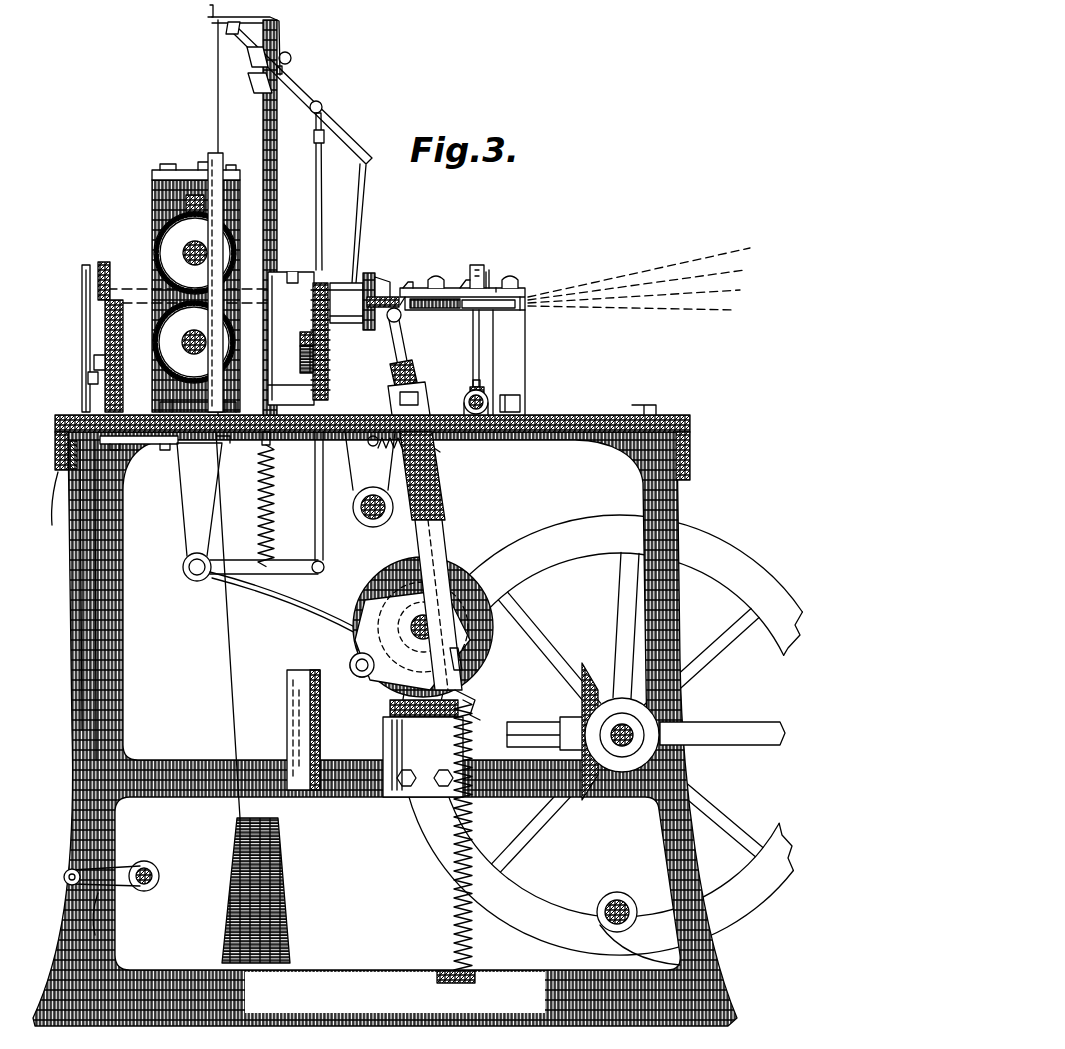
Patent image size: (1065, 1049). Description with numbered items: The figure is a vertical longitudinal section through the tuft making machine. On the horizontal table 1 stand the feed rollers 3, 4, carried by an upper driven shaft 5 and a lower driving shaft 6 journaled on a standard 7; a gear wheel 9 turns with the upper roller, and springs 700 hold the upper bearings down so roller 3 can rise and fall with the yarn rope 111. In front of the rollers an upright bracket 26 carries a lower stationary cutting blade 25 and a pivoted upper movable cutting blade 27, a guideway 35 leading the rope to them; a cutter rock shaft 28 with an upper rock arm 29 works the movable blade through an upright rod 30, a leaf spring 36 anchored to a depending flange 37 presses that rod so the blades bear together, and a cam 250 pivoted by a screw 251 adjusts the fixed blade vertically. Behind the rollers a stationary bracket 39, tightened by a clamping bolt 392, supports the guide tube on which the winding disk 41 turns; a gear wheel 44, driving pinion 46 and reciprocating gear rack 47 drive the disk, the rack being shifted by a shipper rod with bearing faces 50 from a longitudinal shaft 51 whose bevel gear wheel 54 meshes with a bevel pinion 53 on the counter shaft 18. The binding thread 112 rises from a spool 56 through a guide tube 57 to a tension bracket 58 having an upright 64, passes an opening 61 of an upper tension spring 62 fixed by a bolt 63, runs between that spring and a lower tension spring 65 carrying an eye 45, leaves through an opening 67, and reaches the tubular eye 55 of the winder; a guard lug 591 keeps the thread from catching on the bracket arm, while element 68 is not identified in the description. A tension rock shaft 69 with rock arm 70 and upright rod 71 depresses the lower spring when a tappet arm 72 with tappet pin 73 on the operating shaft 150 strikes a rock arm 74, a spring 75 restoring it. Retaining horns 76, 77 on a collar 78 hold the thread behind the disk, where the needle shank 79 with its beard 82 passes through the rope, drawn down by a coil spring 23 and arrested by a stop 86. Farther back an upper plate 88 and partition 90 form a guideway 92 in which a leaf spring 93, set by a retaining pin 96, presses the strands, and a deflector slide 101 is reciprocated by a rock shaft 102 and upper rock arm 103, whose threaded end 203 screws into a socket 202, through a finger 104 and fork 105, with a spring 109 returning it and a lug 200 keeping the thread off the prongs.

The table 1 is at (612, 417).
The upper feed roller 3 is at (195, 253).
The lower feed roller 4 is at (194, 342).
The upper driven shaft 5 is at (186, 254).
The lower driving shaft 6 is at (194, 353).
The standard 7 is at (154, 215).
The gear wheel 9 is at (160, 458).
The counter shaft 18 is at (632, 735).
The coil spring 23 is at (455, 930).
The lower stationary cutting blade 25 is at (105, 325).
The upright bracket 26 is at (617, 905).
The upper movable cutting blade 27 is at (82, 272).
The cutter rock shaft 28 is at (144, 886).
The upper rock arm 29 is at (126, 900).
The upright rod 30 is at (74, 688).
The guideway 35 is at (118, 300).
The leaf spring 36 is at (74, 470).
The depending flange 37 is at (54, 506).
The stationary bracket 39 is at (291, 338).
The winding disk 41 is at (356, 323).
The gear wheel 44 is at (328, 386).
The eye 45 is at (322, 107).
The driving pinion 46 is at (300, 360).
The gear rack 47 is at (300, 340).
The bearing face 50 is at (288, 692).
The winder shaft 51 is at (520, 730).
The bevel pinion 53 is at (645, 755).
The bevel gear wheel 54 is at (588, 668).
The eye 55 is at (396, 290).
The spool 56 is at (266, 890).
The guide tube 57 is at (209, 158).
The tension bracket 58 is at (258, 45).
The opening 61 is at (285, 82).
The upper tension spring 62 is at (318, 92).
The bolt 63 is at (291, 58).
The upright 64 is at (277, 191).
The lower tension spring 65 is at (343, 130).
The opening 67 is at (362, 160).
The block 68 is at (247, 44).
The tension rock shaft 69 is at (183, 568).
The rock arm 70 is at (208, 580).
The upright rod 71 is at (315, 488).
The tappet arm 72 is at (360, 678).
The tappet pin 73 is at (373, 527).
The rock arm 74 is at (300, 600).
The spring 75 is at (274, 520).
The retaining horn 76 is at (384, 278).
The retaining horn 77 is at (440, 576).
The collar 78 is at (368, 273).
The needle shank 79 is at (414, 364).
The beard 82 is at (398, 318).
The stop 86 is at (423, 748).
The upper plate 88 is at (518, 280).
The partition 90 is at (528, 303).
The guideway 92 is at (515, 347).
The leaf spring 93 is at (503, 308).
The retaining pin 96 is at (458, 309).
The deflector slide 101 is at (497, 290).
The deflector rock shaft 102 is at (488, 406).
The upper rock arm 103 is at (476, 333).
The finger 104 is at (490, 272).
The fork 105 is at (490, 262).
The spring 109 is at (450, 456).
The yarn rope 111 is at (665, 268).
The binding thread 112 is at (217, 96).
The operating shaft 150 is at (411, 621).
The lug 200 is at (410, 283).
The socket 202 is at (484, 392).
The threaded lower end 203 is at (480, 382).
The cam 250 is at (94, 360).
The screw 251 is at (88, 377).
The clamping bolt 392 is at (293, 272).
The guard lug 591 is at (208, 9).
The spring 700 is at (186, 204).